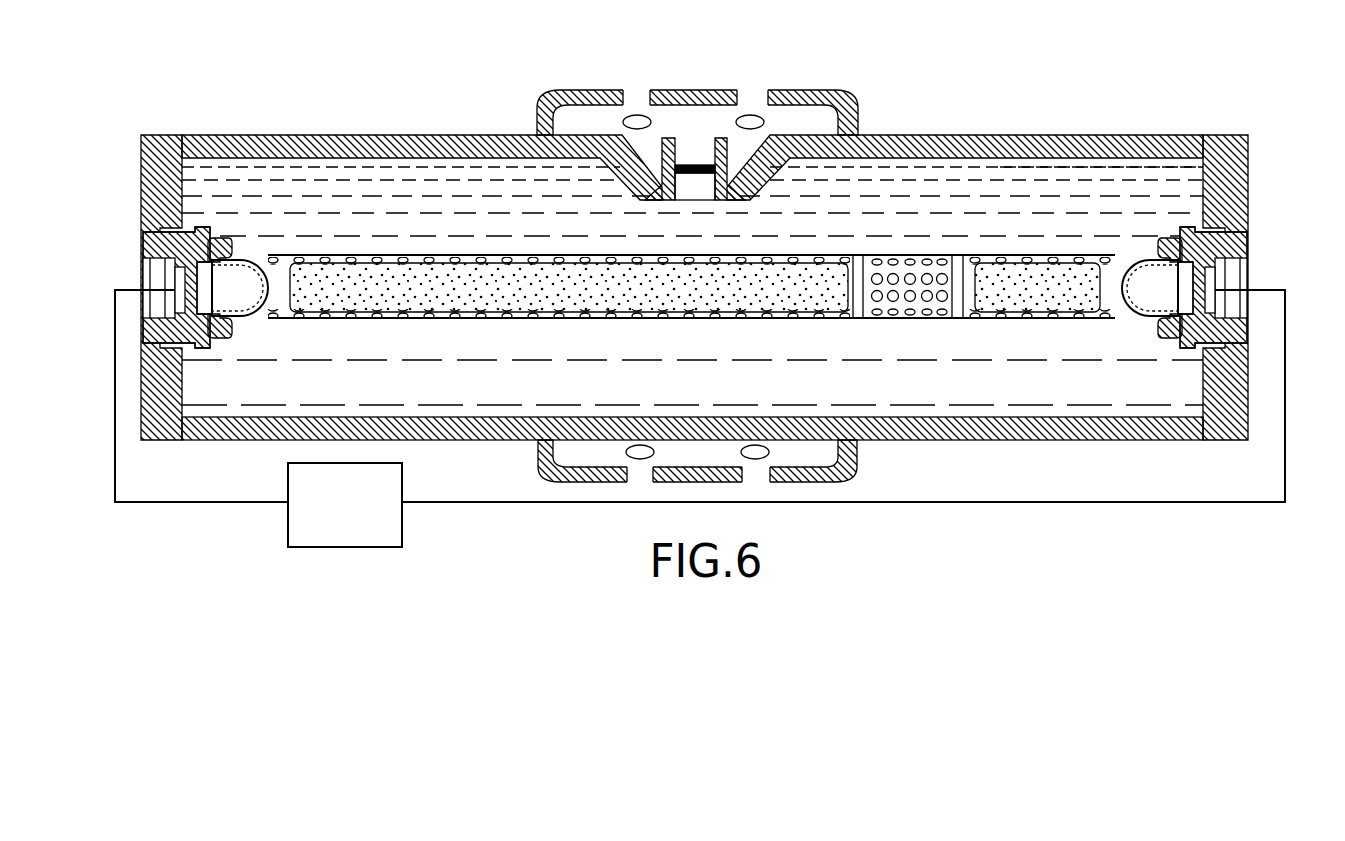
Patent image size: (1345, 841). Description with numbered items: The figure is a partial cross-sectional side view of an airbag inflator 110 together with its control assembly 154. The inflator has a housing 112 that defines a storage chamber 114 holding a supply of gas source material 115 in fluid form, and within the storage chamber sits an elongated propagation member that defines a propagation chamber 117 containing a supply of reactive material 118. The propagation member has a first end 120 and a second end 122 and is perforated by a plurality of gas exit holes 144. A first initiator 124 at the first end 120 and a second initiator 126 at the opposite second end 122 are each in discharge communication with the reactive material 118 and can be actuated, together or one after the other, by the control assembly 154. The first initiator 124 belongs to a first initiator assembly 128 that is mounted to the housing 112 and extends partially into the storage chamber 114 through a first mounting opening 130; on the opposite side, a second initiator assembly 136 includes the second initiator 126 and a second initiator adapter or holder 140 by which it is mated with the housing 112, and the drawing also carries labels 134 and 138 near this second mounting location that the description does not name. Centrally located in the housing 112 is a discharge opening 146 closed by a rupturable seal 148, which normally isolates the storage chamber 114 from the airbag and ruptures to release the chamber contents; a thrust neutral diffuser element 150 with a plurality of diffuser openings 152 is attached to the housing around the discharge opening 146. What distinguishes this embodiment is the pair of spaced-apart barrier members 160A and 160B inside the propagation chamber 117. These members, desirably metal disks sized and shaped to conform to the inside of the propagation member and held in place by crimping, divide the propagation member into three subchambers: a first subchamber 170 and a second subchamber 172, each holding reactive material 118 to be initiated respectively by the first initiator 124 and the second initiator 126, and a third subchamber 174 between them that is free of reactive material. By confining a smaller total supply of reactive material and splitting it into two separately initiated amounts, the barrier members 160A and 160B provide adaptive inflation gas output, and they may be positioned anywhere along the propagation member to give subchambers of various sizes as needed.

The airbag inflator 110 is at (296, 116).
The housing 112 is at (392, 133).
The storage chamber 114 is at (468, 198).
The fluid 115 is at (1020, 178).
The propagation chamber 117 is at (650, 322).
The reactive material 118 is at (485, 292).
The first end 120 is at (302, 250).
The second end 122 is at (1102, 252).
The first initiator 124 is at (235, 292).
The second initiator 126 is at (1160, 275).
The first initiator assembly 128 is at (152, 280).
The first mounting opening 130 is at (165, 235).
The first electrode bracket 134 is at (205, 340).
The second initiator assembly 136 is at (1222, 272).
The second end cap body 138 is at (1228, 228).
The second initiator adapter or holder 140 is at (1178, 340).
The gas exit holes 144 is at (280, 320).
The discharge opening 146 is at (678, 198).
The rupturable seal 148 is at (690, 165).
The thrust neutral diffuser element 150 is at (800, 93).
The diffuser openings 152 is at (640, 93).
The control assembly 154 is at (324, 518).
The first barrier member 160A is at (855, 258).
The second barrier member 160B is at (958, 256).
The first subchamber 170 is at (450, 322).
The second subchamber 172 is at (1048, 322).
The third subchamber 174 is at (900, 322).